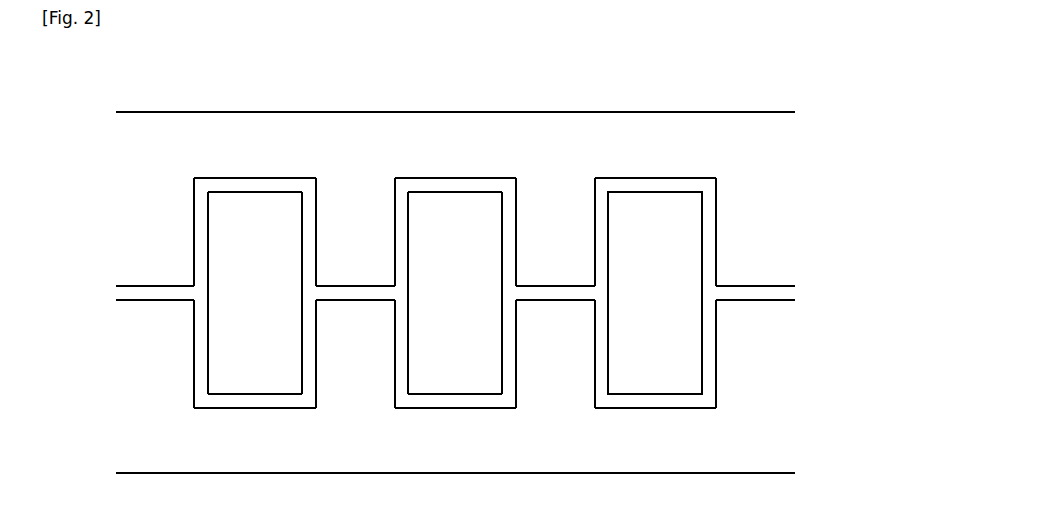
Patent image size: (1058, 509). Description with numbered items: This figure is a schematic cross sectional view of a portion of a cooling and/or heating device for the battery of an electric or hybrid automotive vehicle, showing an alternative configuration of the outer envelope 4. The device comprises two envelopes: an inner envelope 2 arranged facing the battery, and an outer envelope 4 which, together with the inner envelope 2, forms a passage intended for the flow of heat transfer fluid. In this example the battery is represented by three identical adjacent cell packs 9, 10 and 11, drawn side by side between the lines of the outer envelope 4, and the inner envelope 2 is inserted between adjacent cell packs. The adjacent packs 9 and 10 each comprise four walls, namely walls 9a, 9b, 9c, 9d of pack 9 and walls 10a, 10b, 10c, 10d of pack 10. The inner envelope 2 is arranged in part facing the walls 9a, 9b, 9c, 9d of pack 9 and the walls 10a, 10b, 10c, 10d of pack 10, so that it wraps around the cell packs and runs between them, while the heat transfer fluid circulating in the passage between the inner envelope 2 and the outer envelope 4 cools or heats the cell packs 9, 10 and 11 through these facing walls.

The inner envelope 2 is at (656, 179).
The outer envelope 4 is at (456, 112).
The cell pack 9 is at (253, 299).
The wall of pack 9 9a is at (201, 217).
The wall of pack 9 9b is at (256, 192).
The wall of pack 9 9c is at (303, 370).
The wall of pack 9 9d is at (257, 395).
The cell pack 10 is at (453, 302).
The wall of pack 10 10a is at (401, 217).
The wall of pack 10 10b is at (456, 192).
The wall of pack 10 10c is at (503, 370).
The wall of pack 10 10d is at (413, 395).
The cell pack 11 is at (613, 395).